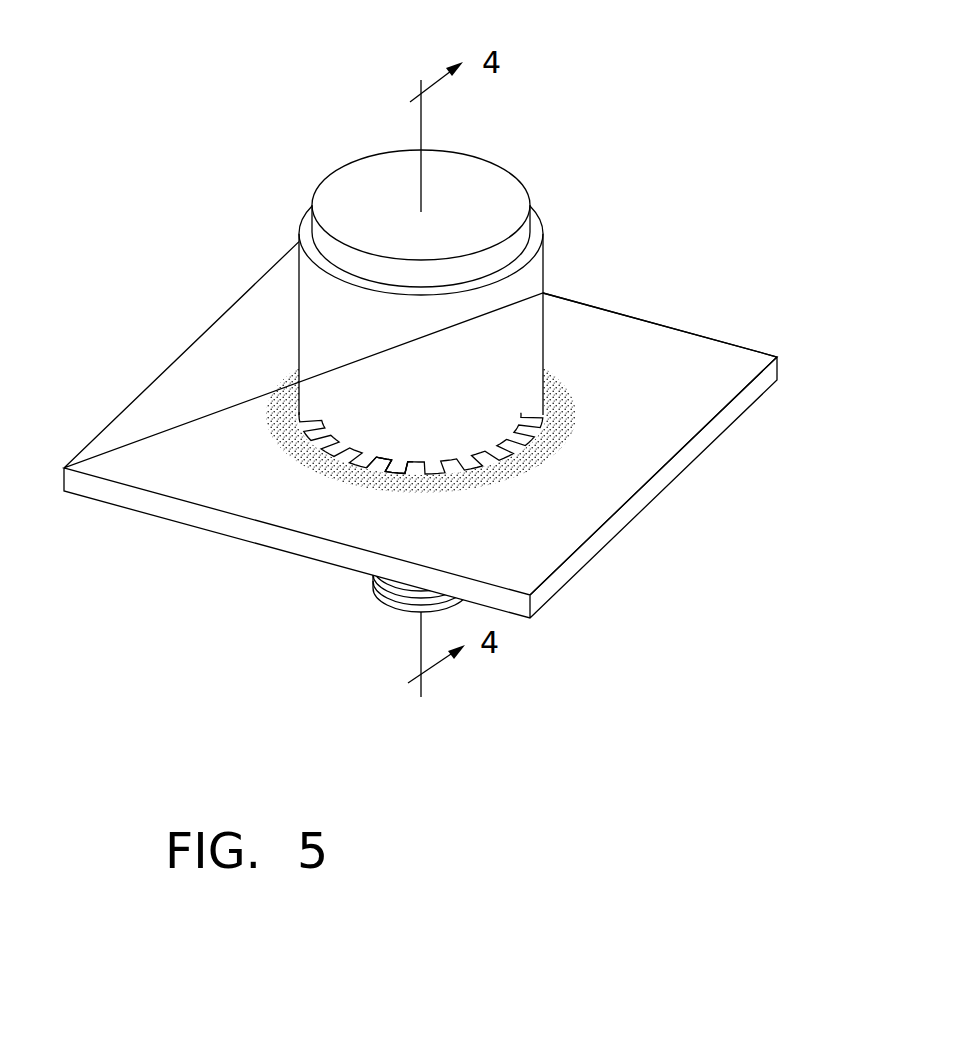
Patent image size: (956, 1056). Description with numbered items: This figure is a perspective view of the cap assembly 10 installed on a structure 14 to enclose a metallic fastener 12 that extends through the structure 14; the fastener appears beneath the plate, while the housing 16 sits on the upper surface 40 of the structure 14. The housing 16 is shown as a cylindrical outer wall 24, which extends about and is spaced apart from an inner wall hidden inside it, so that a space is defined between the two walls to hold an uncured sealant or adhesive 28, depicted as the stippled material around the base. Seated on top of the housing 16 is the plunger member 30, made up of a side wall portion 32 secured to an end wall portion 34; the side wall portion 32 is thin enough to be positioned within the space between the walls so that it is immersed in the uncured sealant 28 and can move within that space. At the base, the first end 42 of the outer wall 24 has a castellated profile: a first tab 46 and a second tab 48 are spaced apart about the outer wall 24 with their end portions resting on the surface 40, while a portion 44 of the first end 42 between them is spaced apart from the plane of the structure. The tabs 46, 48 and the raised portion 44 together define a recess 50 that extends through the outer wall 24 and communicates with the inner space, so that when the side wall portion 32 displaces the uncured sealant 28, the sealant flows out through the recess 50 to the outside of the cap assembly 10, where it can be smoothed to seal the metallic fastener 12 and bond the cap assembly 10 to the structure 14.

The cap assembly 10 is at (525, 97).
The metallic fastener 12 is at (395, 607).
The structure 14 is at (652, 366).
The housing 16 is at (400, 225).
The outer wall 24 is at (327, 305).
The uncured sealant or adhesive 28 is at (553, 400).
The plunger member 30 is at (448, 196).
The side wall portion 32 is at (487, 260).
The end wall portion 34 is at (446, 180).
The surface 40 is at (723, 360).
The first end of outer wall 42 is at (434, 484).
The portion of first end 44 is at (392, 458).
The first tab 46 is at (380, 462).
The second tab 48 is at (407, 470).
The recess 50 is at (386, 448).